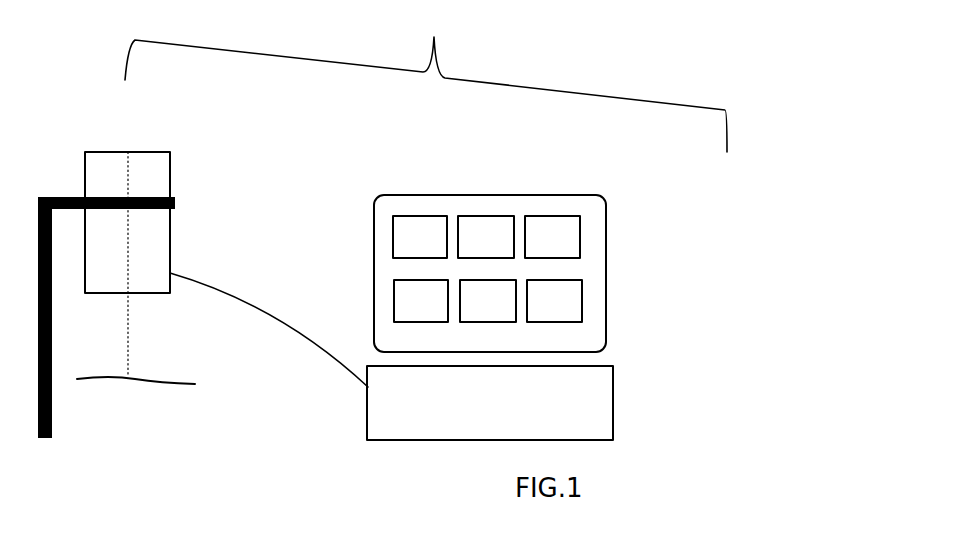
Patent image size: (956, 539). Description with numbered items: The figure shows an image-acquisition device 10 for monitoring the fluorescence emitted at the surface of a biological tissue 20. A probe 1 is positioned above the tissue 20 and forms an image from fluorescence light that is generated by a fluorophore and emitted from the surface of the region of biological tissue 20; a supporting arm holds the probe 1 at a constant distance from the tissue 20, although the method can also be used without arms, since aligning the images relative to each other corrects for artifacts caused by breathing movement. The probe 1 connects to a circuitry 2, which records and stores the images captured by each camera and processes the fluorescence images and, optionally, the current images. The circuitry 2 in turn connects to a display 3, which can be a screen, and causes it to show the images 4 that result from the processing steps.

The probe 1 is at (132, 152).
The circuitry 2 is at (611, 368).
The display 3 is at (535, 198).
The images 4 is at (410, 230).
The device for monitoring fluorescence 10 is at (426, 78).
The biological tissue 20 is at (155, 380).